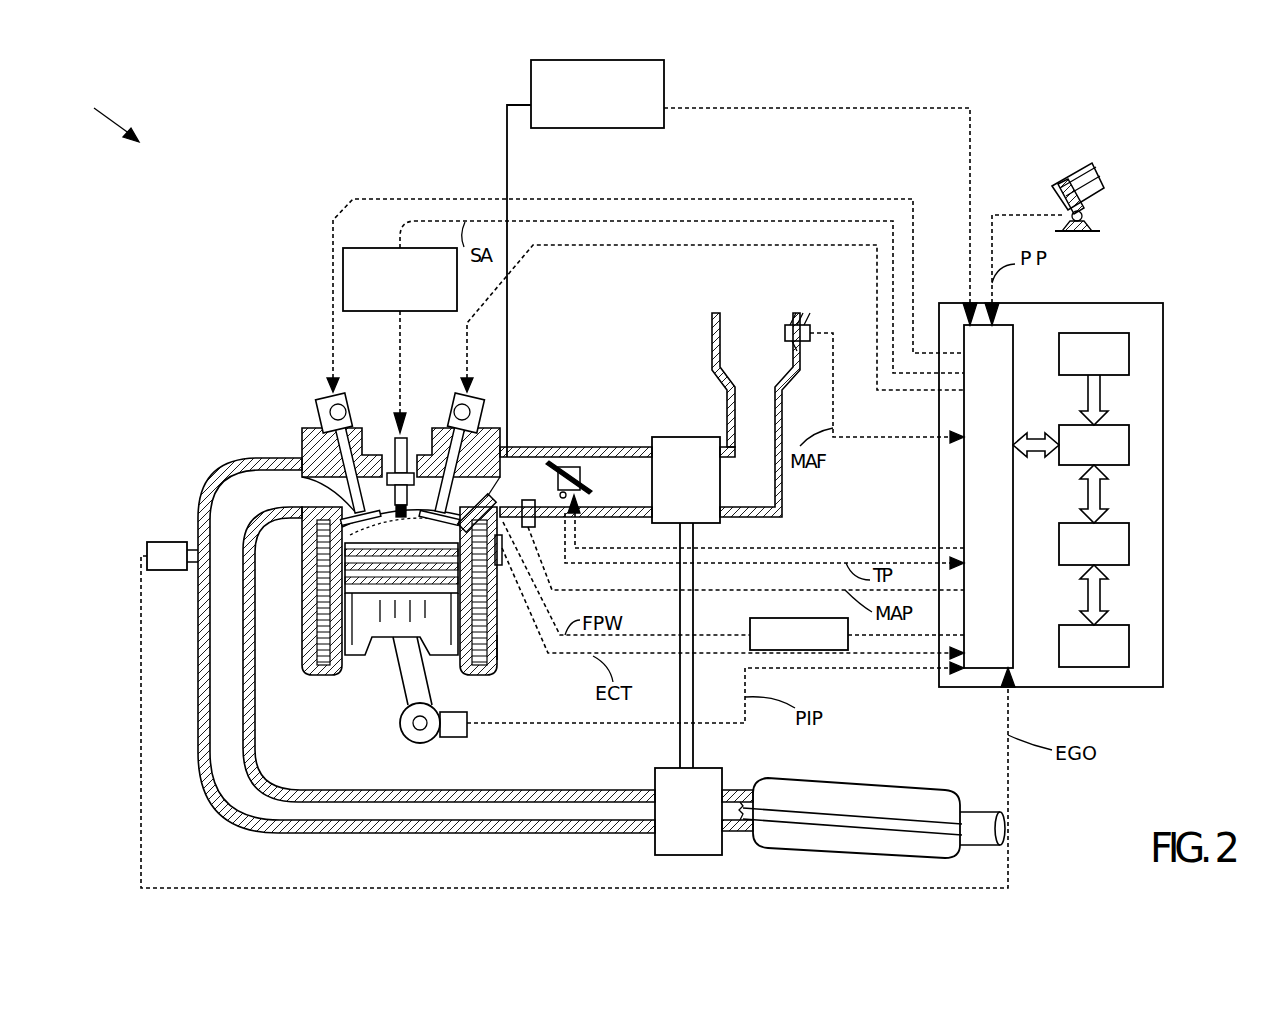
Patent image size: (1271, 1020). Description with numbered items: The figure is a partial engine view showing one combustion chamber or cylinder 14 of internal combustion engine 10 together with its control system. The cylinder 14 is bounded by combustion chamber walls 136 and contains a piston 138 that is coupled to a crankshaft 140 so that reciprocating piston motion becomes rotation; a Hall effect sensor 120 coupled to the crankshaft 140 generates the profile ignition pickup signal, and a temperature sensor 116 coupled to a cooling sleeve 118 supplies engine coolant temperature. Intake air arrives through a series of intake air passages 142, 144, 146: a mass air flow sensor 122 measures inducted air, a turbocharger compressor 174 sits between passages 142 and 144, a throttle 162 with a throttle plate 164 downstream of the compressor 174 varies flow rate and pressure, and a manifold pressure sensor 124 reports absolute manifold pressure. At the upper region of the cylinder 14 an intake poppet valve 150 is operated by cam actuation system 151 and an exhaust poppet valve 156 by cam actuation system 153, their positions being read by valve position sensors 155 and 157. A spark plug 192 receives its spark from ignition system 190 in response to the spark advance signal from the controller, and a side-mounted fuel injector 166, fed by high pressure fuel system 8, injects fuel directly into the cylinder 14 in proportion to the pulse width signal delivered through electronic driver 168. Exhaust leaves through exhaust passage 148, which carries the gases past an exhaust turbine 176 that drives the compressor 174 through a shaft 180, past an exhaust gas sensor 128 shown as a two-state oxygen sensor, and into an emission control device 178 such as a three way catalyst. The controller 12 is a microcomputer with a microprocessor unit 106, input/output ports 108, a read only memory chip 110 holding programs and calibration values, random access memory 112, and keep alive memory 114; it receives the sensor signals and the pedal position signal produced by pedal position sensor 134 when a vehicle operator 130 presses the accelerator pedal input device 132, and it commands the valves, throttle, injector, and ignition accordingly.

The high pressure fuel system 8 is at (664, 72).
The internal combustion engine 10 is at (101, 119).
The controller 12 is at (1155, 303).
The cylinder 14 is at (312, 549).
The microprocessor unit 106 is at (1129, 443).
The input/output ports 108 is at (1013, 335).
The read only memory chip 110 is at (1129, 350).
The random access memory 112 is at (1129, 540).
The keep alive memory 114 is at (1129, 642).
The temperature sensor 116 is at (503, 560).
The cooling sleeve 118 is at (497, 648).
The Hall effect sensor 120 is at (456, 740).
The mass air flow sensor 122 is at (808, 325).
The manifold pressure sensor 124 is at (532, 530).
The exhaust gas sensor 128 is at (146, 548).
The vehicle operator 130 is at (1100, 176).
The input device 132 is at (1055, 190).
The pedal position sensor 134 is at (1085, 216).
The combustion chamber walls 136 is at (343, 662).
The piston 138 is at (386, 642).
The crankshaft 140 is at (410, 742).
The intake air passage 142 is at (772, 361).
The intake air passage 144 is at (637, 492).
The intake air passage 146 is at (540, 492).
The exhaust passage 148 is at (288, 499).
The intake poppet valve 150 is at (408, 458).
The cam actuation system 151 is at (464, 397).
The cam actuation system 153 is at (338, 397).
The valve position sensor 155 is at (482, 412).
The exhaust poppet valve 156 is at (305, 458).
The valve position sensor 157 is at (318, 415).
The throttle 162 is at (575, 467).
The throttle plate 164 is at (548, 462).
The fuel injector 166 is at (484, 520).
The electronic driver 168 is at (758, 623).
The compressor 174 is at (672, 437).
The exhaust turbine 176 is at (655, 840).
The emission control device 178 is at (920, 790).
The shaft 180 is at (693, 730).
The ignition system 190 is at (357, 248).
The spark plug 192 is at (395, 437).